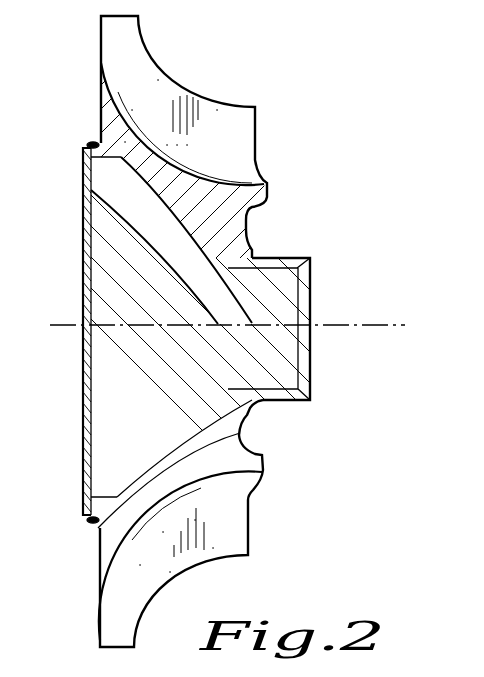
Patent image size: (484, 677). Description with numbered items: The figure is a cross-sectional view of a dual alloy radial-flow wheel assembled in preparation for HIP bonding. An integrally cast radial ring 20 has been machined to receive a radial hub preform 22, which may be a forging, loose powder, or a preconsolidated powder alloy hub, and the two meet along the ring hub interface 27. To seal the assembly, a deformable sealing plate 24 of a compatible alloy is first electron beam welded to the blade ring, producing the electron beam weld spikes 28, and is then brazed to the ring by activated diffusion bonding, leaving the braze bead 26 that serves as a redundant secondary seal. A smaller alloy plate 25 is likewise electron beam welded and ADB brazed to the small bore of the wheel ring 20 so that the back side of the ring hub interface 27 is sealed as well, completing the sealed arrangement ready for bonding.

The radial ring 20 is at (243, 517).
The radial hub preform 22 is at (277, 296).
The deformable sealing plate 24 is at (82, 288).
The smaller alloy plate 25 is at (312, 325).
The braze bead 26 is at (88, 145).
The ring hub interface 27 is at (188, 230).
The electron beam weld spikes 28 is at (116, 172).